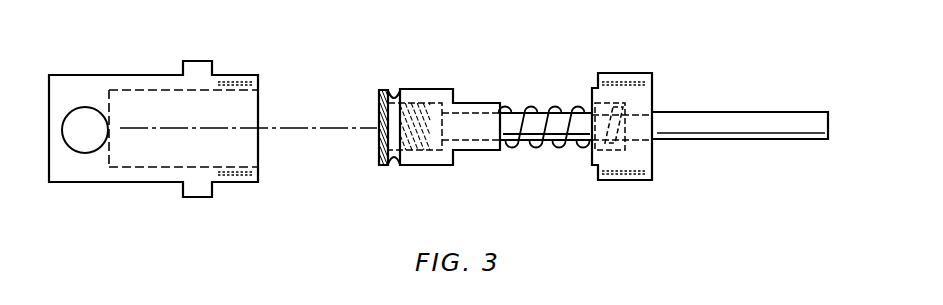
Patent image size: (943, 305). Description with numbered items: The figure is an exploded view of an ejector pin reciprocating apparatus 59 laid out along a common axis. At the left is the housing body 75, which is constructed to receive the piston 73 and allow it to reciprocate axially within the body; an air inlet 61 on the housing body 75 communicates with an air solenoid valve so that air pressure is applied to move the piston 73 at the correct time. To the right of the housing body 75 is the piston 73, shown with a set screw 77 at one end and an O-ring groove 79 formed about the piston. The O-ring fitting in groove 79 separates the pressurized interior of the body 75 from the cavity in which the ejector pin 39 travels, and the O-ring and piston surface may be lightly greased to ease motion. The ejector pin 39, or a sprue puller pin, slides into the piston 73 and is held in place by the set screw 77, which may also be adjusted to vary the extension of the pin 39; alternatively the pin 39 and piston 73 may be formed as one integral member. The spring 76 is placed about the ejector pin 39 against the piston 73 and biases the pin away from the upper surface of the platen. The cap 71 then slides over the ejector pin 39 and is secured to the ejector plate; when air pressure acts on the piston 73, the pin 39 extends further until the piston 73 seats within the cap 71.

The ejector pin reciprocating apparatus 59 is at (433, 15).
The air inlet 61 is at (90, 107).
The housing body 75 is at (258, 75).
The set screw 77 is at (383, 133).
The O-ring groove 79 is at (394, 92).
The piston 73 is at (445, 88).
The spring 76 is at (528, 112).
The cap 71 is at (645, 73).
The ejector pin 39 is at (784, 112).